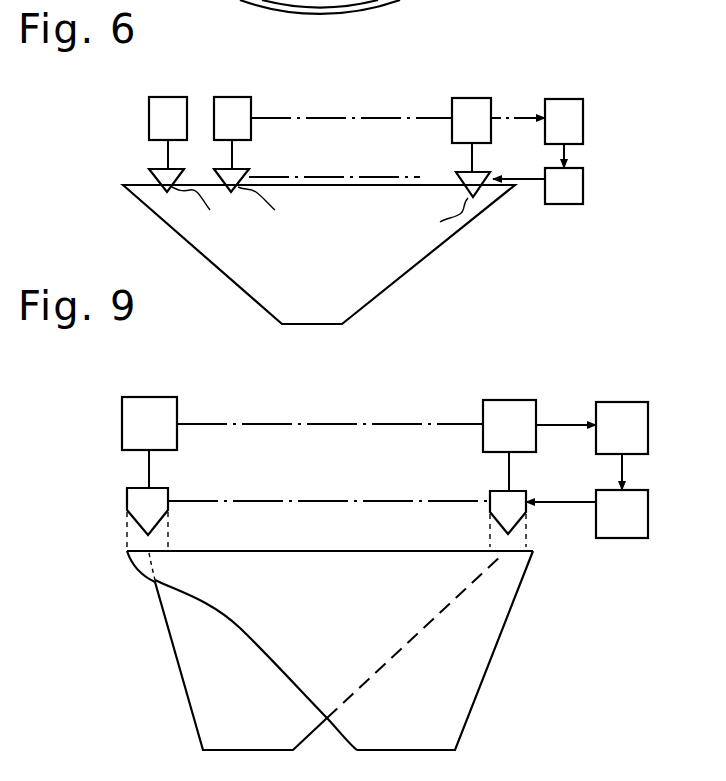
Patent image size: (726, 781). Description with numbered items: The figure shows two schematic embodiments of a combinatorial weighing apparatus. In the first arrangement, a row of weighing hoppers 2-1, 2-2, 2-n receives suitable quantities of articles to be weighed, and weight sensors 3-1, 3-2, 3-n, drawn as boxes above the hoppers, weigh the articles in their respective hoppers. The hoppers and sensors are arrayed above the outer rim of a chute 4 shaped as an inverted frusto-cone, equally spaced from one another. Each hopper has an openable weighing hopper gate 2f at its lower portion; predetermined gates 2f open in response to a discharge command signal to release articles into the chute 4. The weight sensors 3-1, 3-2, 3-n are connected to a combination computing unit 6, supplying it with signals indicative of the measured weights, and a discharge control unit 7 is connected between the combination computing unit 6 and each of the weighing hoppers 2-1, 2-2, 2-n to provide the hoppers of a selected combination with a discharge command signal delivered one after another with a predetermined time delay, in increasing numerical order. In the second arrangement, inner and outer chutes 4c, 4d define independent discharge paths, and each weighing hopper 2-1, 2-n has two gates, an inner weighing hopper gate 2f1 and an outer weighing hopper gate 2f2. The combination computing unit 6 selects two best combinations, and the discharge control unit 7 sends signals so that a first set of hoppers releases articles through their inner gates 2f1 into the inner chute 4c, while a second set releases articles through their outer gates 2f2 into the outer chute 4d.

In FIG. 6, the weighing hopper 2-1 is at (158, 171).
In FIG. 9, the weighing hopper 2-1 is at (137, 488).
In FIG. 6, the weighing hopper 2-2 is at (242, 175).
In FIG. 6, the weighing hopper 2-n is at (458, 173).
In FIG. 9, the weighing hopper 2-n is at (498, 490).
In FIG. 6, the weighing hopper gate 2f is at (320, 217).
In FIG. 9, the weighing hopper gate 2f is at (162, 525).
In FIG. 9, the inner weighing hopper gate 2f1 is at (488, 528).
In FIG. 9, the outer weighing hopper gate 2f2 is at (130, 515).
In FIG. 6, the weight sensor 3-1 is at (169, 96).
In FIG. 9, the weight sensor 3-1 is at (153, 397).
In FIG. 6, the weight sensor 3-2 is at (233, 96).
In FIG. 6, the weight sensor 3-n is at (473, 97).
In FIG. 9, the weight sensor 3-n is at (510, 400).
In FIG. 6, the chute 4 is at (238, 287).
In FIG. 9, the inner chute 4c is at (197, 703).
In FIG. 9, the outer chute 4d is at (477, 655).
In FIG. 6, the combination computing unit 6 is at (577, 99).
In FIG. 9, the combination computing unit 6 is at (624, 402).
In FIG. 6, the discharge control unit 7 is at (583, 190).
In FIG. 9, the discharge control unit 7 is at (648, 517).